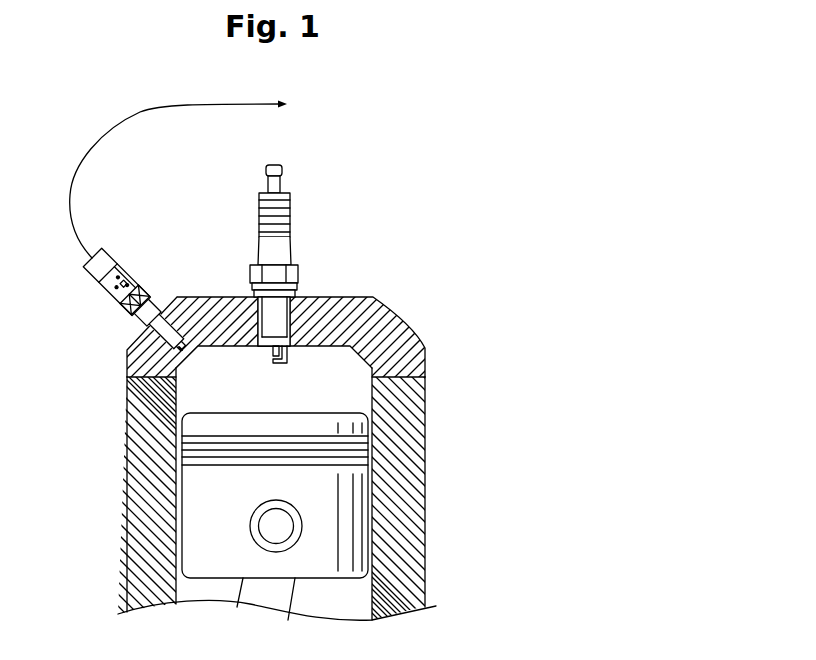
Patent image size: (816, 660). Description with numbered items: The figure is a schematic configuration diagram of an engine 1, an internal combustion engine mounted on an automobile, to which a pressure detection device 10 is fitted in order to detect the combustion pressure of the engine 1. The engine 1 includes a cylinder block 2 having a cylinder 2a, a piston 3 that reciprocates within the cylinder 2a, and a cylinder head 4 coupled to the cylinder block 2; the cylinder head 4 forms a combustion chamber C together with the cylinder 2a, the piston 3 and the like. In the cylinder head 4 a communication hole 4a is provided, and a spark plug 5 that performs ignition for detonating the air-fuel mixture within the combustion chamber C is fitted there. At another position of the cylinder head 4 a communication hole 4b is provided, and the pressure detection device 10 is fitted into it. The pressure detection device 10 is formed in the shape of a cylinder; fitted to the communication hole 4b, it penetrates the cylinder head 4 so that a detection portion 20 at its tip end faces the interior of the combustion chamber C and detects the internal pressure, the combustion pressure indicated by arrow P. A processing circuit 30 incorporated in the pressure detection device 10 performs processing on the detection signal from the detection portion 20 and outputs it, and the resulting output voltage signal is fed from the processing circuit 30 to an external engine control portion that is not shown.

The engine 1 is at (378, 234).
The cylinder block 2 is at (338, 493).
The cylinder 2a is at (428, 497).
The piston 3 is at (178, 540).
The cylinder head 4 is at (420, 339).
The communication hole 4a is at (286, 318).
The communication hole 4b is at (126, 354).
The spark plug 5 is at (291, 247).
The pressure detection device 10 is at (190, 225).
The detection portion 20 is at (190, 346).
The processing circuit 30 is at (116, 281).
The combustion pressure P is at (201, 362).
The combustion chamber C is at (313, 396).